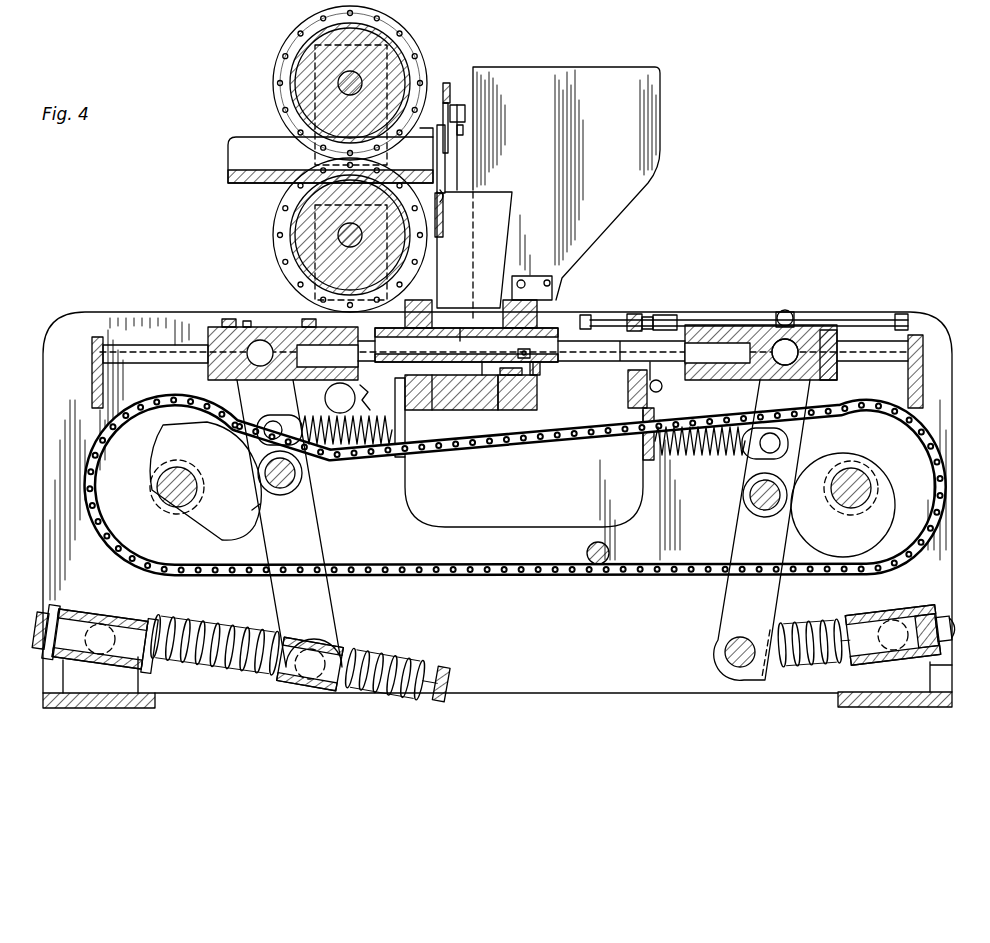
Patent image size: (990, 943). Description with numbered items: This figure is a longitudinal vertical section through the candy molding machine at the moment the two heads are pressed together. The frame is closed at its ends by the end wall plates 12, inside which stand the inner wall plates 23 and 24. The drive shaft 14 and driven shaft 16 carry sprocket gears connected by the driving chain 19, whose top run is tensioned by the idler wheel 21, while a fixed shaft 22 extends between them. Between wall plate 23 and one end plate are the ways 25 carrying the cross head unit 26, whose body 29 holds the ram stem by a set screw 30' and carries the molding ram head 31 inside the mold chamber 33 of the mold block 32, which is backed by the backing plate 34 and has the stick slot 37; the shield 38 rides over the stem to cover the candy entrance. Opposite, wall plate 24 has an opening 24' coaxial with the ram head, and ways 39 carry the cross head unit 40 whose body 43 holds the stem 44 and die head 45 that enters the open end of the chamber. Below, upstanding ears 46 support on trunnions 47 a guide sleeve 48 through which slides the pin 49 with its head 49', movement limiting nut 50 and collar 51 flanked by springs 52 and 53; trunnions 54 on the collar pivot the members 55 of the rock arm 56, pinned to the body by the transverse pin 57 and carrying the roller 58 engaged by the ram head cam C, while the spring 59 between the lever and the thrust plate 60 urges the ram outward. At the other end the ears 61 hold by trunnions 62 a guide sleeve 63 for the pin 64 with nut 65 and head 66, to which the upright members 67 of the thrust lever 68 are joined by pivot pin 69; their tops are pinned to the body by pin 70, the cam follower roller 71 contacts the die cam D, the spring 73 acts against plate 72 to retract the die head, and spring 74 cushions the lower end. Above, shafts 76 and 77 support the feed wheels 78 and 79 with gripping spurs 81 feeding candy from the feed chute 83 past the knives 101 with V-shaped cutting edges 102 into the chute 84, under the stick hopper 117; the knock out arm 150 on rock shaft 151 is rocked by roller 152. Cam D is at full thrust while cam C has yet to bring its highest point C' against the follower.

The end wall plate 12 is at (92, 340).
The drive shaft 14 is at (864, 484).
The driven shaft 16 is at (160, 490).
The driving chain 19 is at (548, 577).
The idler wheel 21 is at (378, 408).
The fixed shaft 22 is at (606, 549).
The inner wall plate 23 is at (410, 392).
The inner wall plate 24 is at (631, 385).
The opening 24' is at (649, 306).
The ways 25 is at (140, 345).
The cross head unit 26 is at (228, 322).
The body 29 is at (210, 330).
The set screw 30' is at (293, 308).
The molding ram head 31 is at (505, 380).
The mold block 32 is at (480, 395).
The mold chamber 33 is at (522, 375).
The backing plate 34 is at (430, 395).
The stick slot 37 is at (505, 325).
The shield 38 is at (440, 325).
The ways 39 is at (855, 360).
The cross head unit 40 is at (750, 326).
The body 43 is at (822, 332).
The stem 44 is at (668, 342).
The die head 45 is at (540, 362).
The upstanding ears 46 is at (100, 610).
The trunnions 47 is at (104, 630).
The guide sleeve 48 is at (145, 628).
The pin 49 is at (31, 620).
The head 49' is at (453, 676).
The movement limiting nut 50 is at (56, 612).
The collar 51 is at (285, 645).
The spring 52 is at (372, 655).
The spring 53 is at (218, 633).
The trunnions 54 is at (305, 683).
The members 55 is at (310, 532).
The rock arm 56 is at (334, 547).
The transverse pin 57 is at (247, 322).
The roller 58 is at (302, 475).
The spring 59 is at (372, 450).
The thrust plate 60 is at (403, 455).
The ears 61 is at (928, 672).
The trunnions 62 is at (897, 626).
The guide sleeve 63 is at (928, 612).
The pin 64 is at (866, 627).
The nut 65 is at (945, 615).
The head 66 is at (770, 668).
The upright members 67 is at (722, 620).
The thrust lever 68 is at (714, 601).
The pivot pin 69 is at (725, 654).
The pin 70 is at (785, 366).
The cam follower roller 71 is at (745, 492).
The plate 72 is at (645, 457).
The spring 73 is at (683, 456).
The spring 74 is at (808, 668).
The upper shaft 76 is at (342, 78).
The lower shaft 77 is at (342, 230).
The upper feed wheel 78 is at (312, 38).
The lower feed wheel 79 is at (276, 233).
The pins or spurs 81 is at (396, 34).
The feed chute 83 is at (228, 180).
The chute 84 is at (505, 236).
The knives 101 is at (450, 84).
The V-shaped cutting edges 102 is at (442, 198).
The hopper 117 is at (571, 55).
The knock out arm 150 is at (588, 314).
The rock shaft 151 is at (862, 318).
The roller 152 is at (790, 312).
The ram head cam C is at (199, 481).
The highest point of cam C C' is at (276, 510).
The die cam D is at (888, 507).